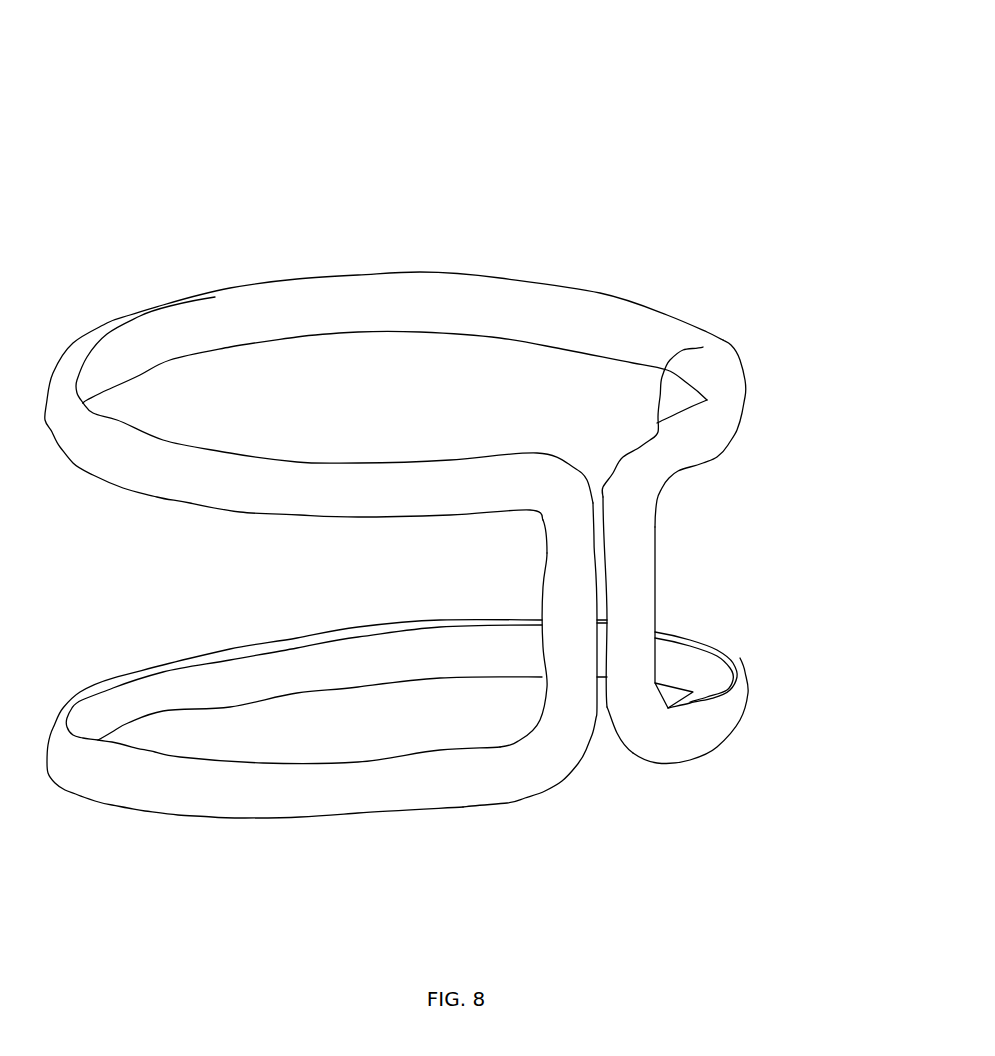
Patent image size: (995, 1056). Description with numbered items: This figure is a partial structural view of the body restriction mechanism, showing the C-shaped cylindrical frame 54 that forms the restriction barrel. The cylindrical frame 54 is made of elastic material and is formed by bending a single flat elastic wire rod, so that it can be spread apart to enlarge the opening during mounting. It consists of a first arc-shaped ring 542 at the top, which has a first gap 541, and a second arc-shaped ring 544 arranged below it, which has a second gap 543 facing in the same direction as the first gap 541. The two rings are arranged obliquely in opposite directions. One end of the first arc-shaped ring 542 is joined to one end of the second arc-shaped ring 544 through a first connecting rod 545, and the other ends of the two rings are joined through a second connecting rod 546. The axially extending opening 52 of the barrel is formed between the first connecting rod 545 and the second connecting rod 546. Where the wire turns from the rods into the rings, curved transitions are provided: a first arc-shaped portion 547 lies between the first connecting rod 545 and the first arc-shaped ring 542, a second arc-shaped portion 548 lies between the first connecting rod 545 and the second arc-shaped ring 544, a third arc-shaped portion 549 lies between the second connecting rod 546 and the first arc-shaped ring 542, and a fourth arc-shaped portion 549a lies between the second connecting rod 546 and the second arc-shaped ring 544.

The cylindrical frame 54 is at (465, 227).
The first gap 541 is at (613, 490).
The first arc-shaped ring 542 is at (218, 325).
The second gap 543 is at (612, 755).
The second arc-shaped ring 544 is at (300, 790).
The first connecting rod 545 is at (557, 590).
The second connecting rod 546 is at (638, 608).
The first arc-shaped portion 547 is at (558, 493).
The second arc-shaped portion 548 is at (548, 758).
The third arc-shaped portion 549 is at (703, 347).
The fourth arc-shaped portion 549a is at (663, 742).
The opening 52 is at (600, 566).